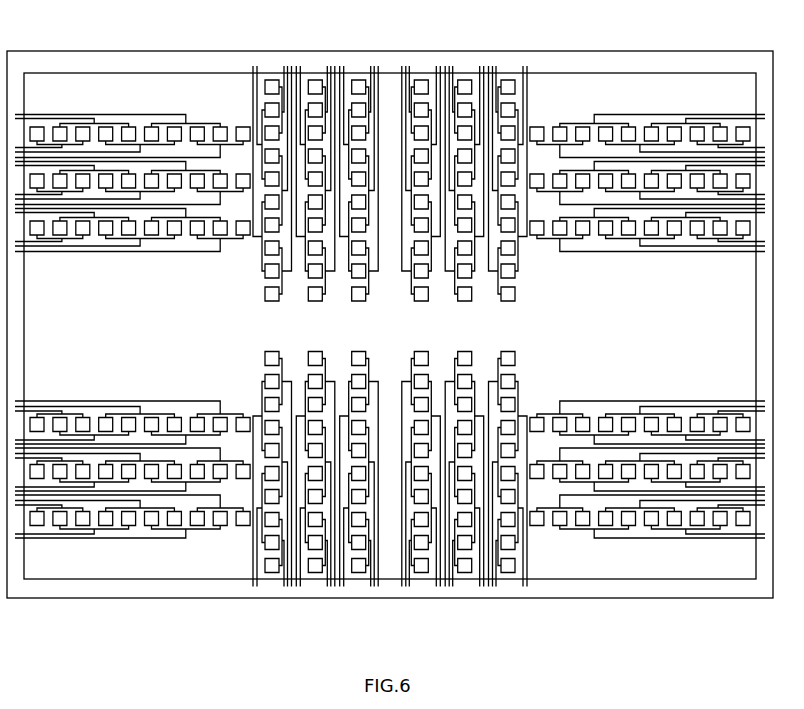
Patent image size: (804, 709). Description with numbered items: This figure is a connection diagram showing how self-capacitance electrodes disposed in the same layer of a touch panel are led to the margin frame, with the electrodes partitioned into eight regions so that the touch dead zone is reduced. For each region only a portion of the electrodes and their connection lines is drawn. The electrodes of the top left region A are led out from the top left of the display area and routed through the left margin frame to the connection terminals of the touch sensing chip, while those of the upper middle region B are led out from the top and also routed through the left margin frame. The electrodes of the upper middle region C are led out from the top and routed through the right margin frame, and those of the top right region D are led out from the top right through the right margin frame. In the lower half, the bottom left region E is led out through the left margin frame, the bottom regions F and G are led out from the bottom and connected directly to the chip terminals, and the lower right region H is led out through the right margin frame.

The Part A region A is at (131, 261).
The Part B region B is at (317, 37).
The Part C region C is at (457, 62).
The Part D region D is at (670, 262).
The Part E region E is at (94, 391).
The Part F region F is at (317, 592).
The Part G region G is at (468, 592).
The Part H region H is at (640, 388).